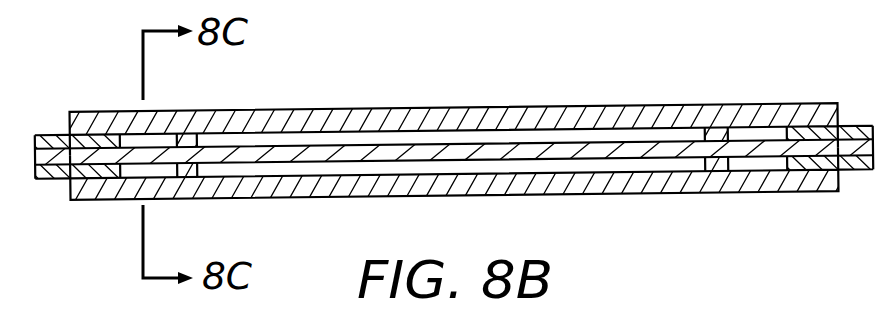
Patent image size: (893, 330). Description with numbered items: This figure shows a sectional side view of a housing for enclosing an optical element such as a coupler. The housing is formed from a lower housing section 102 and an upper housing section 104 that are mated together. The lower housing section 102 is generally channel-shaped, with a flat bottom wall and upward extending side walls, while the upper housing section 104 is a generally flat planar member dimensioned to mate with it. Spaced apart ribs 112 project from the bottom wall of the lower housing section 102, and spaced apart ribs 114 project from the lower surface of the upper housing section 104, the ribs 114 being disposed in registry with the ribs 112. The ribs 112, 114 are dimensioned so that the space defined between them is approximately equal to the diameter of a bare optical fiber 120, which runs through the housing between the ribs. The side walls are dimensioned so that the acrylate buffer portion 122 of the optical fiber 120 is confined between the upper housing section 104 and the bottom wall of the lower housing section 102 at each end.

The lower housing section 102 is at (455, 190).
The upper housing section 104 is at (343, 113).
The ribs 112 is at (198, 177).
The ribs 114 is at (198, 138).
The bare optical fiber 120 is at (473, 145).
The acrylate buffer portion 122 is at (53, 133).